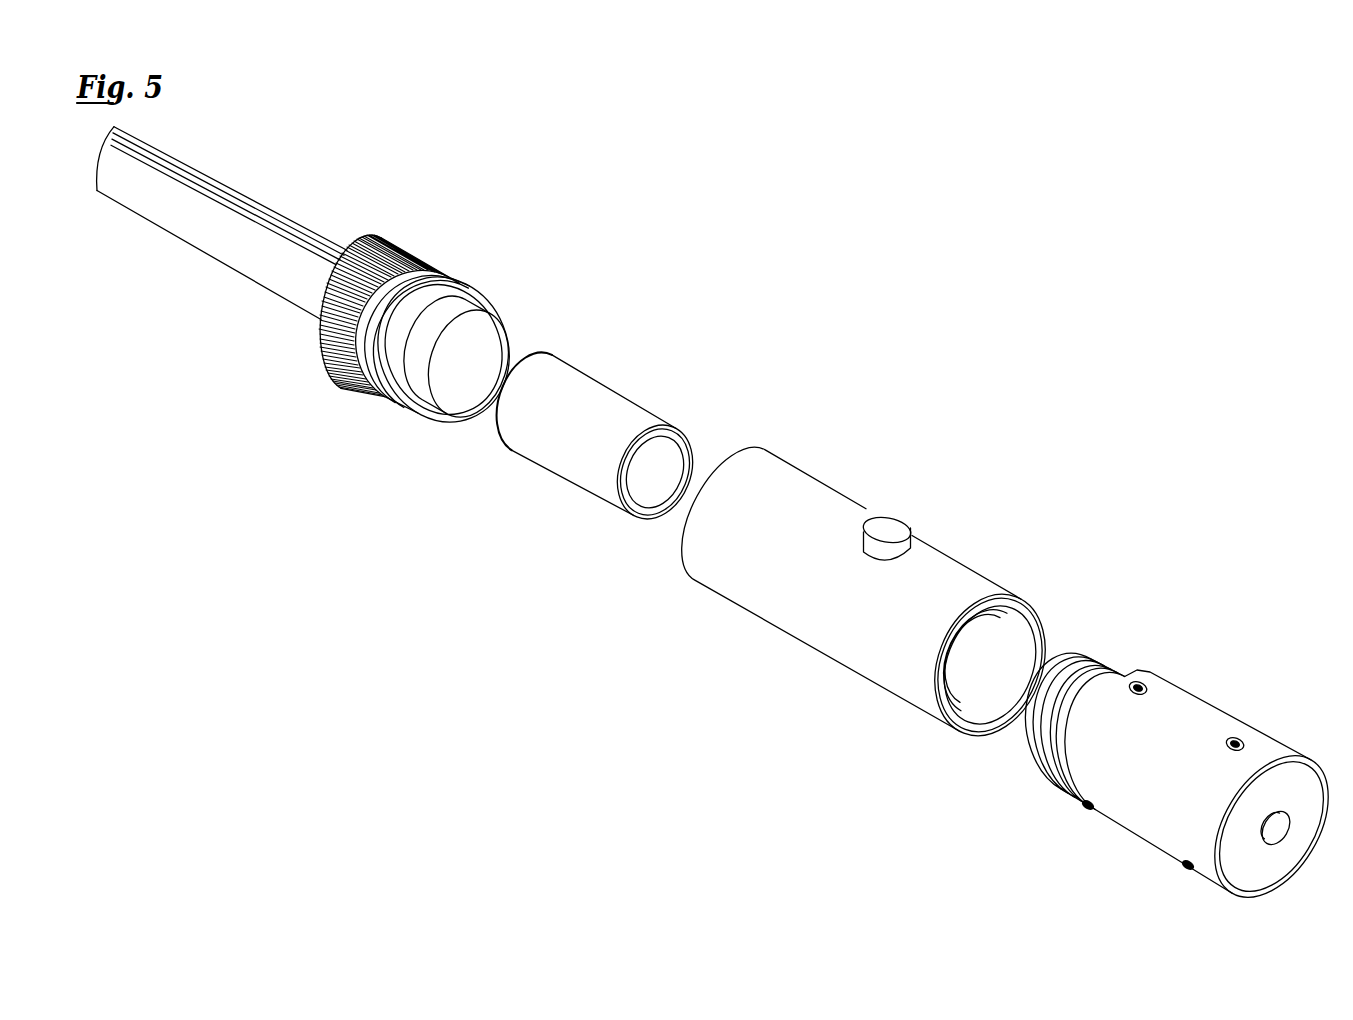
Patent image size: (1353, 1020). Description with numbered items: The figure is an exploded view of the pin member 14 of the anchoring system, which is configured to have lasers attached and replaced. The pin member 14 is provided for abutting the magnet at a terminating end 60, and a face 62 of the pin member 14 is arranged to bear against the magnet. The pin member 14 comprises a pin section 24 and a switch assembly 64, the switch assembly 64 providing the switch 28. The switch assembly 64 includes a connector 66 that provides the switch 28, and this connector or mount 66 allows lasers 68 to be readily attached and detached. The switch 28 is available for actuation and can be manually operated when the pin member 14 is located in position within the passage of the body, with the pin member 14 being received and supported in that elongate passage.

The pin member 14 is at (878, 360).
The pin section 24 is at (313, 210).
The switch 28 is at (907, 525).
The terminating end 60 is at (98, 205).
The face 62 is at (98, 160).
The switch assembly 64 is at (643, 583).
The connector 66 is at (850, 643).
The lasers 68 is at (1183, 703).